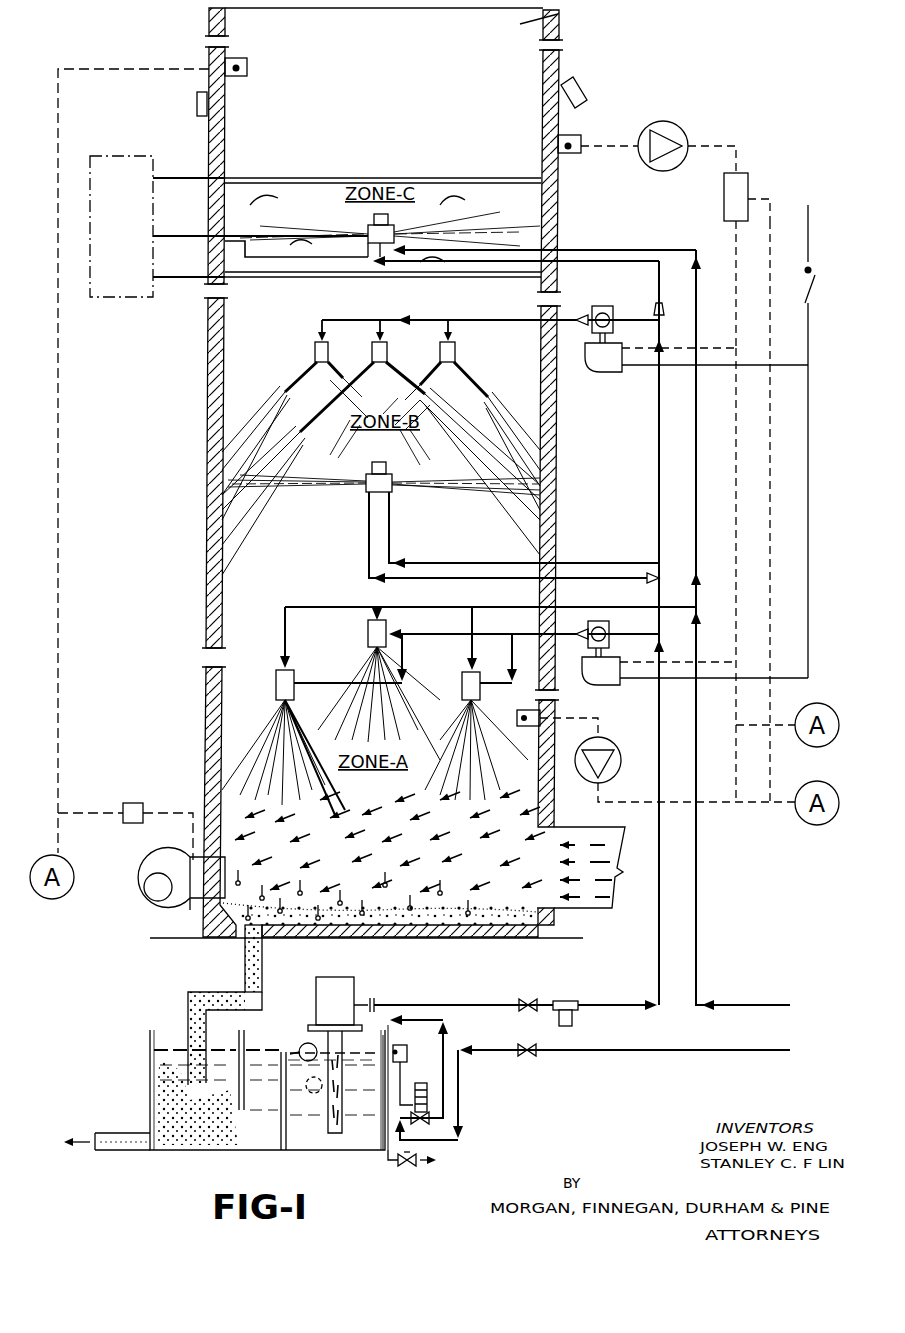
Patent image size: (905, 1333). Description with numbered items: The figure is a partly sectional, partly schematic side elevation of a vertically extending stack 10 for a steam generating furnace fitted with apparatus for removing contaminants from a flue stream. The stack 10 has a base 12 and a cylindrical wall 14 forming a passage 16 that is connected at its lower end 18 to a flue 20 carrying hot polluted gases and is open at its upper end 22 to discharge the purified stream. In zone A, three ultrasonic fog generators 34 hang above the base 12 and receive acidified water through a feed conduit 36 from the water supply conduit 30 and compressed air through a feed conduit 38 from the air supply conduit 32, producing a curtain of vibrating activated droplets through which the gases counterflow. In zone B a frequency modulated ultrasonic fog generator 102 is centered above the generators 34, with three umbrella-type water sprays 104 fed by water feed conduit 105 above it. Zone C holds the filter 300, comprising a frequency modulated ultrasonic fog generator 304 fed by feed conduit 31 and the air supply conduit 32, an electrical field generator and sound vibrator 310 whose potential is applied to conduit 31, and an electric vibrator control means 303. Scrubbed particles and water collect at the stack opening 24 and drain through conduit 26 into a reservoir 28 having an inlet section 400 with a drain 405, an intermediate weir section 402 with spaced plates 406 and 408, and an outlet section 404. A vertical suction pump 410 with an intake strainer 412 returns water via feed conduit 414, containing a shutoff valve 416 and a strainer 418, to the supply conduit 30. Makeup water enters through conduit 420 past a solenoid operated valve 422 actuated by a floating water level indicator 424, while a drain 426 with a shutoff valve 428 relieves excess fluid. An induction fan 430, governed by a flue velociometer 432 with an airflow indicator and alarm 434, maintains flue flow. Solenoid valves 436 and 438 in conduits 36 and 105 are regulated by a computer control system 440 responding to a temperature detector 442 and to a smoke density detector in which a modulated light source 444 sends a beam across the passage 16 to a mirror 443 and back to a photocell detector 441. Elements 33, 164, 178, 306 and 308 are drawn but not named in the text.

The stack 10 is at (198, 470).
The base 12 is at (420, 938).
The cylindrical wall 14 is at (205, 688).
The passage 16 is at (208, 597).
The lower end 18 is at (466, 875).
The flue 20 is at (596, 850).
The upper end 22 is at (560, 17).
The stack opening 24 is at (240, 945).
The drain conduit 26 is at (262, 978).
The reservoir 28 is at (142, 1068).
The water supply conduit 30 is at (658, 700).
The water feed conduit 31 is at (634, 266).
The air supply conduit 32 is at (694, 700).
The liquid branch line 33 is at (604, 250).
The ultrasonic fog generators 34 is at (366, 640).
The water feed conduit 36 is at (410, 634).
The air feed conduit 38 is at (402, 607).
The frequency modulated ultrasonic fog generator 102 is at (364, 493).
The umbrella-type water sprays 104 is at (440, 360).
The water feed conduit 105 is at (456, 318).
The feed line to nozzle 102 164 is at (460, 560).
The feed line to nozzle 102 178 is at (526, 580).
The filter 300 is at (410, 168).
The electric vibrator control means 303 is at (122, 305).
The frequency modulated ultrasonic fog generator 304 is at (547, 208).
The upper screen 306 is at (264, 178).
The lower screen 308 is at (318, 282).
The electrical field generator and sound vibrator 310 is at (328, 248).
The inlet section 400 is at (172, 1030).
The intermediate weir section 402 is at (272, 1050).
The outlet section 404 is at (316, 1140).
The drain 405 is at (120, 1132).
The plate 406 is at (240, 1105).
The plate 408 is at (287, 1110).
The vertical suction pump 410 is at (341, 1004).
The intake strainer 412 is at (332, 1135).
The feed conduit 414 is at (422, 1005).
The shutoff valve 416 is at (540, 985).
The strainer 418 is at (576, 1020).
The makeup water conduit 420 is at (726, 1050).
The solenoid operated valve 422 is at (405, 1050).
The water level indicator 424 is at (385, 1044).
The drain 426 is at (388, 1162).
The shutoff valve 428 is at (404, 1170).
The motor-operated induction fan 430 is at (134, 898).
The flue velociometer 432 is at (237, 58).
The airflow indicator and alarm 434 is at (58, 853).
The solenoid operated valve 436 is at (600, 661).
The solenoid operated valve 438 is at (596, 372).
The computer control system 440 is at (750, 185).
The photocell detector 441 is at (580, 140).
The temperature detector 442 is at (543, 712).
The mirror 443 is at (582, 92).
The modulated light source 444 is at (197, 103).